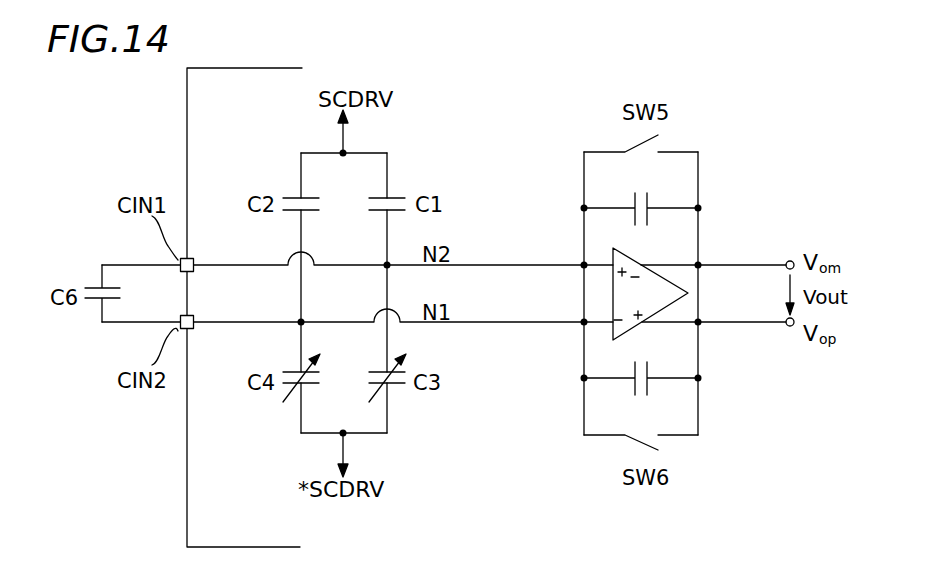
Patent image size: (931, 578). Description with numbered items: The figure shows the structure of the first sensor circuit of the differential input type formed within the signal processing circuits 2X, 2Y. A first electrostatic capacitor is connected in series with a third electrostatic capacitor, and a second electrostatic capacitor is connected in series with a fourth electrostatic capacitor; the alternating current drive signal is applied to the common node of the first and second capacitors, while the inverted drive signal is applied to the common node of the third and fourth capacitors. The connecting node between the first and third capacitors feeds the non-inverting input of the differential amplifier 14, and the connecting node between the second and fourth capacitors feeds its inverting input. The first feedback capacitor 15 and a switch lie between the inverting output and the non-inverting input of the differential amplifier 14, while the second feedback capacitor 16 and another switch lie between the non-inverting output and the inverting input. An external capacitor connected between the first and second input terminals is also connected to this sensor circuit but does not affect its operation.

The differential amplifier 14 is at (695, 295).
The first feedback capacitor 15 is at (685, 193).
The second feedback capacitor 16 is at (685, 363).
The signal processing circuit 2X is at (265, 291).
The signal processing circuit 2Y is at (252, 73).